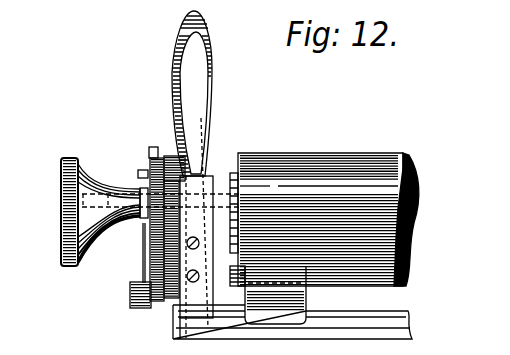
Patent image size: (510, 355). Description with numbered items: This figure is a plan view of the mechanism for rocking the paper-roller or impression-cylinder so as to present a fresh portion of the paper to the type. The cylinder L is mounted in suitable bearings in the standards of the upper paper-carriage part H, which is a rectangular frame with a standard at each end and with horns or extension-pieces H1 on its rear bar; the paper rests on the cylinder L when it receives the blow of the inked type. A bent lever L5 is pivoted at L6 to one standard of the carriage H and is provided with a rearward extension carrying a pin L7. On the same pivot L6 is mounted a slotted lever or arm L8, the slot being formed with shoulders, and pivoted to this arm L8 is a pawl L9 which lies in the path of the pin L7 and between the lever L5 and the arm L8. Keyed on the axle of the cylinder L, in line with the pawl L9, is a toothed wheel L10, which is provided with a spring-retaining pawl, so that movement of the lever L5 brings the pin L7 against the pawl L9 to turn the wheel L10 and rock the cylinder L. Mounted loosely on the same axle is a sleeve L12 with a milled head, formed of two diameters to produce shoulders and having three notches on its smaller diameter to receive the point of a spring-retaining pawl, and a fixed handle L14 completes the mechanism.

The cylinder L is at (323, 146).
The bent lever L5 is at (204, 31).
The fixed handle L14 is at (190, 75).
The pawl L9 is at (145, 140).
The pin L7 is at (136, 162).
The sleeve L12 is at (93, 187).
The toothed wheel L10 is at (140, 241).
The slotted lever or arm L8 is at (135, 269).
The pivot L6 is at (122, 293).
The horns or extension-pieces H1 is at (300, 286).
The paper-carriage part H is at (300, 331).